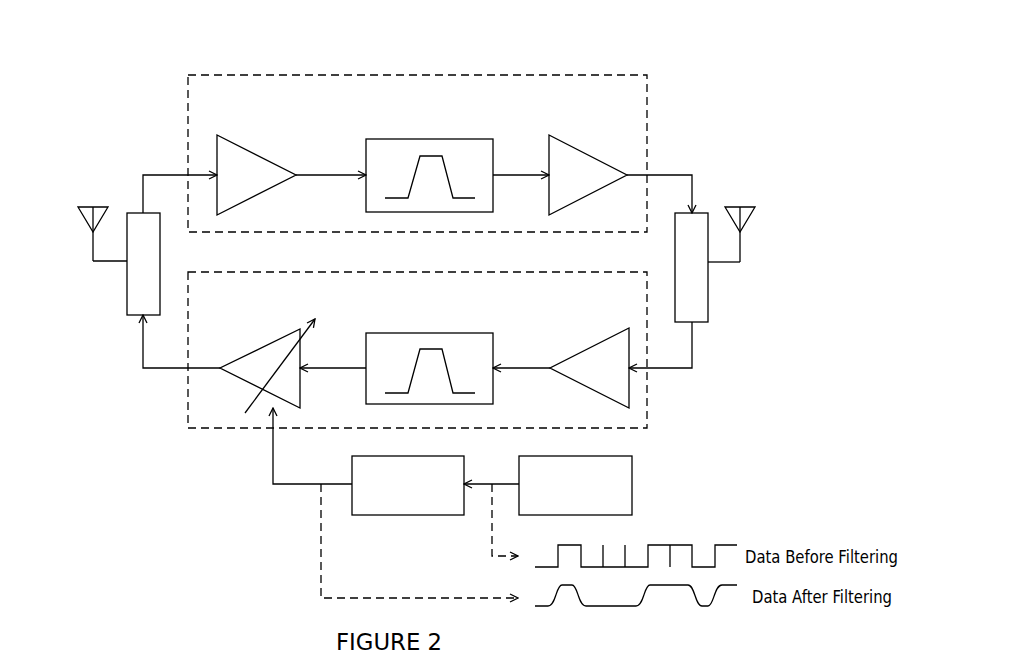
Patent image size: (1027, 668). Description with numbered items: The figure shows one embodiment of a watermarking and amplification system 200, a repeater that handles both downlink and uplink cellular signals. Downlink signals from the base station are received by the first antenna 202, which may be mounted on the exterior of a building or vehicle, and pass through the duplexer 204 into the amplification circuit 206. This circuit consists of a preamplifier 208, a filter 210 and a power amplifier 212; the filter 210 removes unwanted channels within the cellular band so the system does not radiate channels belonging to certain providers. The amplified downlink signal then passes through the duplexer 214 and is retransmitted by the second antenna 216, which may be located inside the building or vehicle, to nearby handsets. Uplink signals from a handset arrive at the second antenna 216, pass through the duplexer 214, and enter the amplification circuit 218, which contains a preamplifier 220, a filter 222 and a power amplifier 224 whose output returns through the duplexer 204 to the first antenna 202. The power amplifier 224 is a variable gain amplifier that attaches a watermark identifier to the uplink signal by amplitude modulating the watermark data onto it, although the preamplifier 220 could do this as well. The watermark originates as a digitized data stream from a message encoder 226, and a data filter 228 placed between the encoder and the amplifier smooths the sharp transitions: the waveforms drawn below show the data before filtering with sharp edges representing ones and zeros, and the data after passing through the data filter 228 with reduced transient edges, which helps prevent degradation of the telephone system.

The watermarking and amplification system 200 is at (659, 51).
The first antenna 202 is at (93, 207).
The duplexer 204 is at (127, 312).
The amplification circuit 206 is at (527, 75).
The preamplifier 208 is at (255, 154).
The filter 210 is at (437, 139).
The power amplifier 212 is at (570, 146).
The duplexer 214 is at (708, 318).
The second antenna 216 is at (731, 207).
The amplification circuit 218 is at (527, 272).
The preamplifier 220 is at (590, 388).
The filter 222 is at (437, 333).
The power amplifier 224 is at (263, 389).
The message encoder 226 is at (632, 484).
The data filter 228 is at (386, 516).